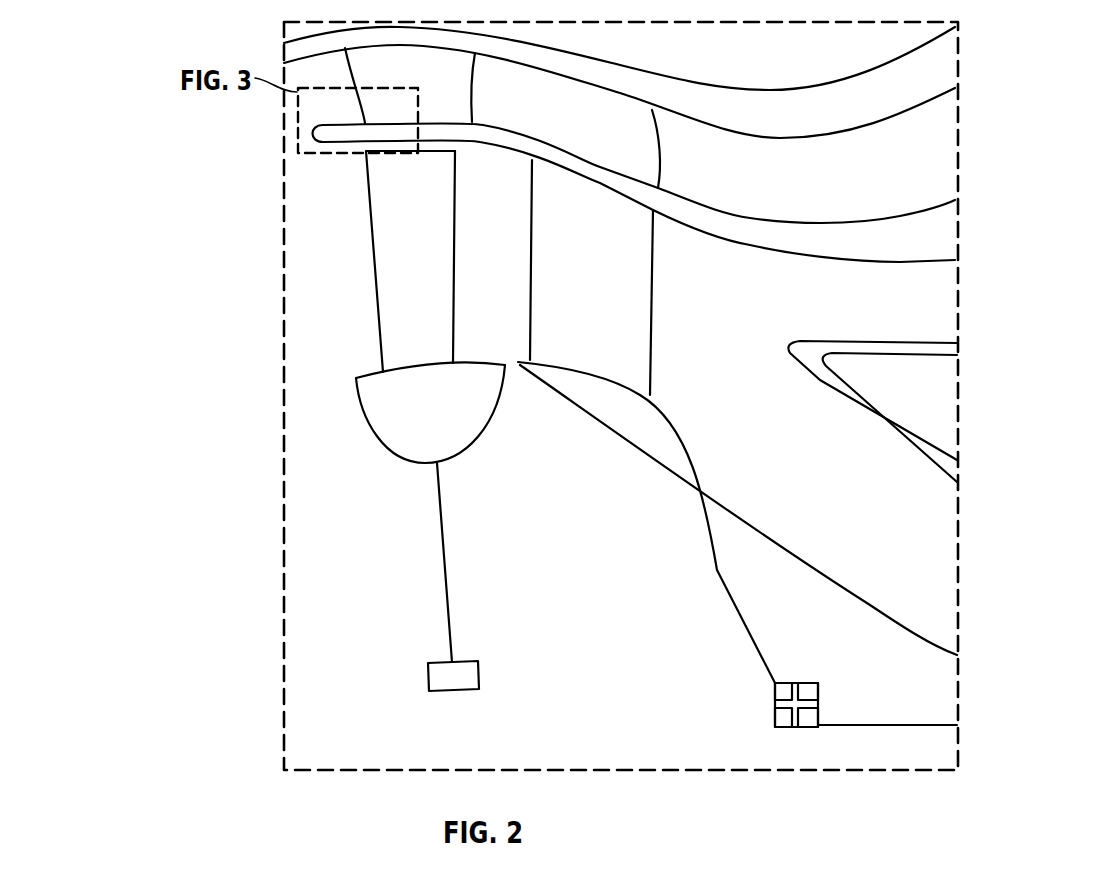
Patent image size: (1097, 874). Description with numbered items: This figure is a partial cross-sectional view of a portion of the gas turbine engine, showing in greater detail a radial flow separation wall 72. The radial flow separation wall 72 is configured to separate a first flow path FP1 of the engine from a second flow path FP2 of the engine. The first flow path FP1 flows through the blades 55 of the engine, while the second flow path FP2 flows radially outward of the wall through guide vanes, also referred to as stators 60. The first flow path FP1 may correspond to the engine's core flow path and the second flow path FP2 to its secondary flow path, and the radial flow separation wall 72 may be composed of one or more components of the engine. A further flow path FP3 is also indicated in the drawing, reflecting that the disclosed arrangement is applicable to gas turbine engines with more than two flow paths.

The stators 60 is at (418, 77).
The radial flow separation wall 72 is at (307, 132).
The blades 55 is at (437, 287).
The first flow path FP1 is at (170, 131).
The second flow path FP2 is at (730, 177).
The third flow path FP3 is at (685, 322).